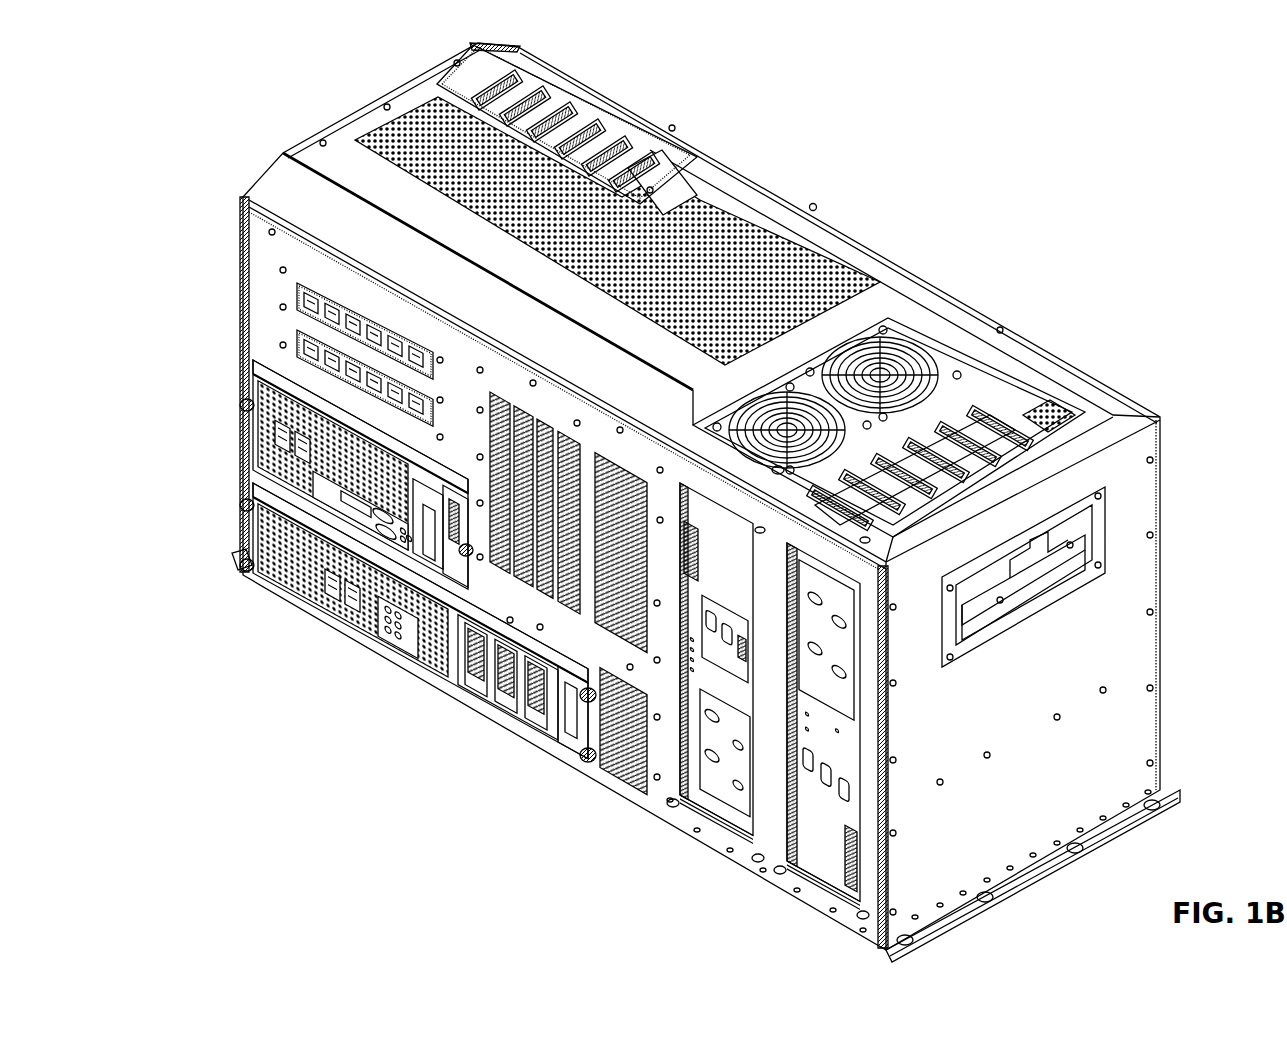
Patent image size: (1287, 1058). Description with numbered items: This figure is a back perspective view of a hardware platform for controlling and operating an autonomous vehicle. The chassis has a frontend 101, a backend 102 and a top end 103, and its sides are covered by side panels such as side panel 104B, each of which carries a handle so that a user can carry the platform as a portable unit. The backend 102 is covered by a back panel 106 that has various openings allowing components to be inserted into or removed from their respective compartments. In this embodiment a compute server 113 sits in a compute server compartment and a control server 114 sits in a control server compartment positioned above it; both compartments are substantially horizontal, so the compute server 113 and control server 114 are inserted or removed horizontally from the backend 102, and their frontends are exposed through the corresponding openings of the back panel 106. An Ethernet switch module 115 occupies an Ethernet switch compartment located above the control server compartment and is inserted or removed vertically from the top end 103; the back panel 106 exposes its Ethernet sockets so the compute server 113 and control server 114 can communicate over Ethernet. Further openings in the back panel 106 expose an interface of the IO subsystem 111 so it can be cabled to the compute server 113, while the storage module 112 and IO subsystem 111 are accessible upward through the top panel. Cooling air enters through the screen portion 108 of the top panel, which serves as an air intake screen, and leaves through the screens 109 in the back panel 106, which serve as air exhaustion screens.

The frontend 101 is at (996, 260).
The backend 102 is at (447, 772).
The top end 103 is at (312, 156).
The side panel 104B is at (1033, 709).
The back panel 106 is at (252, 232).
The screen portion 108 is at (733, 242).
The screens 109 is at (587, 503).
The IO subsystem 111 is at (1000, 401).
The storage module 112 is at (541, 103).
The compute server 113 is at (377, 647).
The control server 114 is at (253, 428).
The Ethernet switch module 115 is at (302, 305).